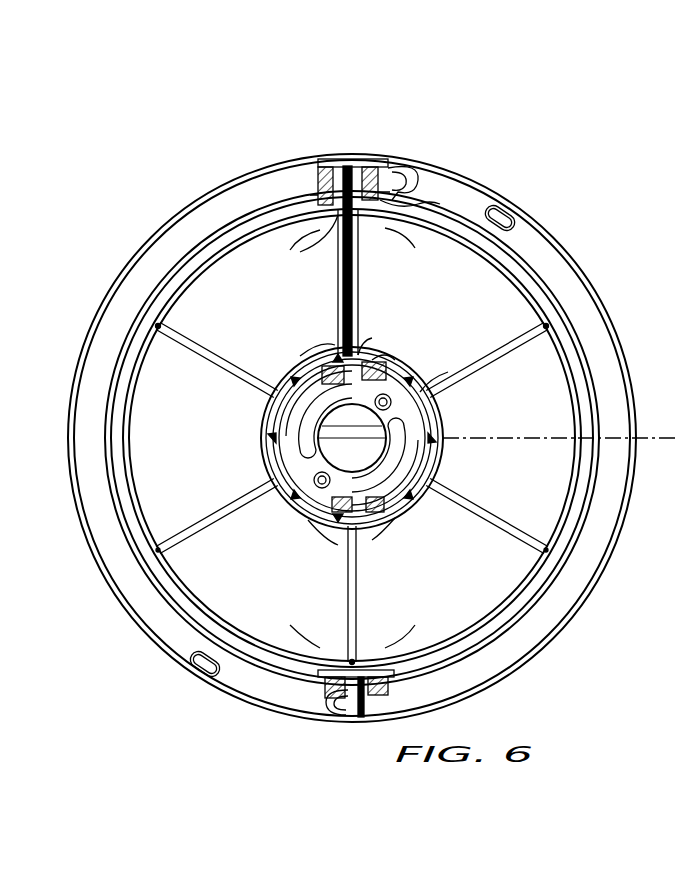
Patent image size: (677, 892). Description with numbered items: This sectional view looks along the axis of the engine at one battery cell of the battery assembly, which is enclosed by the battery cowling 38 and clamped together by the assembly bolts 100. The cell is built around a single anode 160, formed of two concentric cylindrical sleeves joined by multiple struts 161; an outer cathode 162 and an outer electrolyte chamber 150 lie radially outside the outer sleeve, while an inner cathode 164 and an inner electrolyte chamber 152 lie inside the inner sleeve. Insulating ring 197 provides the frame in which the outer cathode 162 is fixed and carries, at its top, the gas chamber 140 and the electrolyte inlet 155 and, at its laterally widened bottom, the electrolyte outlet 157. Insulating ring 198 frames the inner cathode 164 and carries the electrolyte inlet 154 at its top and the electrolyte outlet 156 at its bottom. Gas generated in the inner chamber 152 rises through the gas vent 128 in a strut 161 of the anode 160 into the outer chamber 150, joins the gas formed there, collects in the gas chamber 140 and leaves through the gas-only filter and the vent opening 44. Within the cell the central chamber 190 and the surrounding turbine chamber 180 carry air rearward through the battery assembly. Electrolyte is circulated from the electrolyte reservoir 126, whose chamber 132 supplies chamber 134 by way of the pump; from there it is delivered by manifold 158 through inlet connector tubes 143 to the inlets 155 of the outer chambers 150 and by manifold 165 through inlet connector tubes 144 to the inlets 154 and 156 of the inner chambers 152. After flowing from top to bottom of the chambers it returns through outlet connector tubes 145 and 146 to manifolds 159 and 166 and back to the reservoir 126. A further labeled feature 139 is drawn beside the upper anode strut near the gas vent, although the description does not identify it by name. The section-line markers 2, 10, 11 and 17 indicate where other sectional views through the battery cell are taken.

The section line 2- 2 is at (345, 66).
The section line 10- 10 is at (388, 128).
The section line 11- 11 is at (340, 423).
The section line 17- 17 is at (345, 104).
The battery cowling 38 is at (600, 292).
The vent opening 44 is at (343, 160).
The assembly bolts 100 is at (160, 330).
The electrolyte reservoir 126 is at (275, 480).
The gas vent 128 is at (362, 300).
The chamber of reservoir 132 is at (330, 366).
The chamber of reservoir 134 is at (392, 368).
The spoke web 139 is at (338, 222).
The gas chamber 140 is at (322, 168).
The inlet connector tubes 143 is at (420, 192).
The inlet connector tubes 144 is at (270, 455).
The outlet connector tubes 145 is at (322, 706).
The outlet connector tubes 146 is at (418, 500).
The outer electrolyte chamber 150 is at (215, 250).
The inner electrolyte chamber 152 is at (268, 412).
The electrolyte inlet 154 is at (366, 368).
The electrolyte inlet 155 is at (400, 170).
The electrolyte outlet 156 is at (322, 515).
The electrolyte outlet 157 is at (340, 722).
The manifold 158 is at (516, 216).
The manifold 159 is at (208, 678).
The anode 160 is at (130, 415).
The strut 161 is at (183, 362).
The outer cathode 162 is at (180, 258).
The inner cathode 164 is at (296, 384).
The manifold 165 is at (305, 502).
The manifold 166 is at (440, 408).
The turbine chamber 180 is at (263, 310).
The central chamber 190 is at (428, 386).
The insulating ring 197 is at (305, 230).
The insulating ring 198 is at (330, 362).